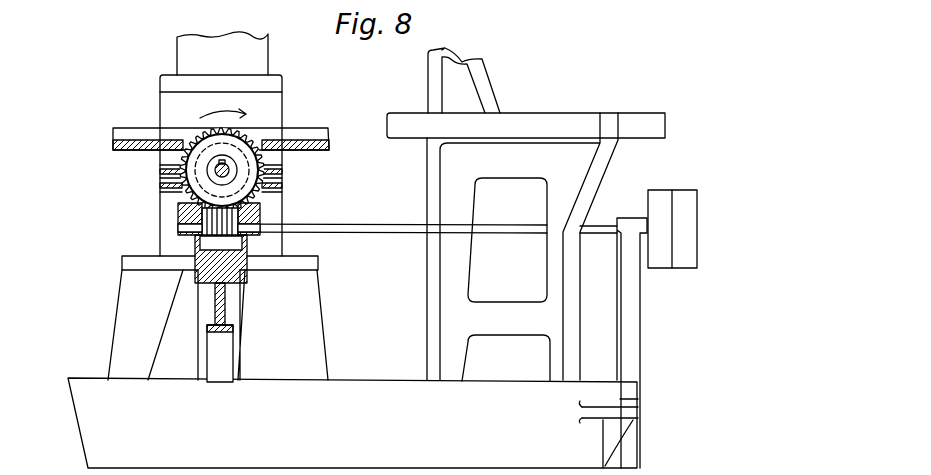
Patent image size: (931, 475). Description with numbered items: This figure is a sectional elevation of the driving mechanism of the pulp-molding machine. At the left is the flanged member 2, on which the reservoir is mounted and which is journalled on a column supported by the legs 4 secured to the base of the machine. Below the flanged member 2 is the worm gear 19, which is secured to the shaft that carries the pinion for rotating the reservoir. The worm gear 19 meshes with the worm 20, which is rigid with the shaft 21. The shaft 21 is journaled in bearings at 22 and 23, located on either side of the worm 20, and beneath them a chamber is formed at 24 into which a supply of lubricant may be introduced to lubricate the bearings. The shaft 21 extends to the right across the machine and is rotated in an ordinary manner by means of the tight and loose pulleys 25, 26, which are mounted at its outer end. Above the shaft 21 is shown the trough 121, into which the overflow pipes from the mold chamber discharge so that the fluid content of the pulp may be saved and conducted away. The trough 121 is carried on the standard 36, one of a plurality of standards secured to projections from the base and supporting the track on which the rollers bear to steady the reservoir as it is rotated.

The flanged member 2 is at (177, 60).
The legs 4 is at (125, 312).
The worm gear 19 is at (257, 166).
The worm 20 is at (262, 220).
The shaft 21 is at (384, 220).
The bearing 22 is at (192, 236).
The bearing 23 is at (251, 236).
The chamber 24 is at (200, 279).
The tight pulley 25 is at (660, 195).
The loose pulley 26 is at (683, 201).
The standard 36 is at (455, 165).
The trough 121 is at (522, 120).